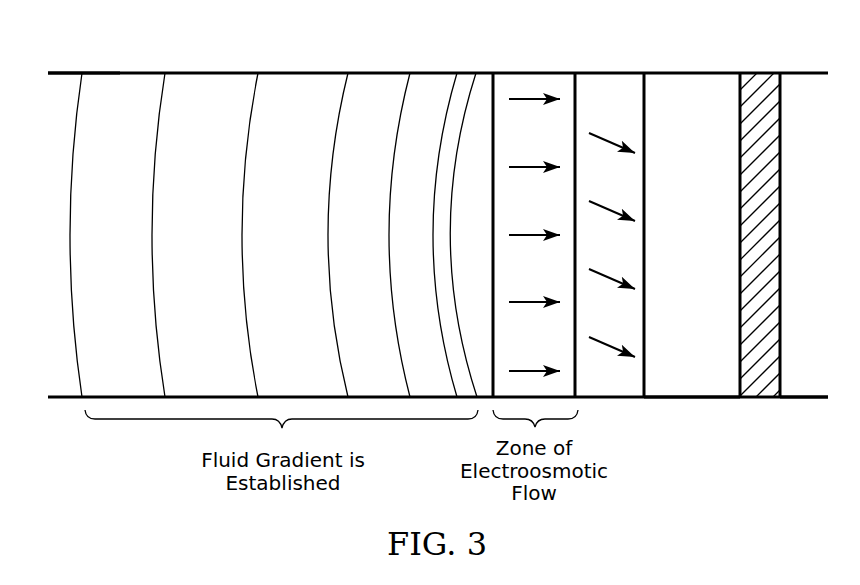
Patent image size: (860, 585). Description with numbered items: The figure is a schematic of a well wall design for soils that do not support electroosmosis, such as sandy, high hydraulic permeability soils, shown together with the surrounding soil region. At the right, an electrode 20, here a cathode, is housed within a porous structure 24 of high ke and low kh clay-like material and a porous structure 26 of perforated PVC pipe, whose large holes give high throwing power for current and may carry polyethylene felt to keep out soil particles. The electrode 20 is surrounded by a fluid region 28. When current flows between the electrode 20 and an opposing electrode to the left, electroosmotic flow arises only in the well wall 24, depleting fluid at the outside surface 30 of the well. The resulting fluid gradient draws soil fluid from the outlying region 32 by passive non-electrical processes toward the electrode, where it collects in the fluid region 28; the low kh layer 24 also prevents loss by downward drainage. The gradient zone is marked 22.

The electrode 20 is at (760, 80).
The fluid gradient region 22 is at (120, 73).
The porous structure 24 is at (531, 80).
The porous structure 26 is at (608, 80).
The fluid region 28 is at (677, 252).
The outside surface 30 is at (449, 97).
The outlying region 32 is at (50, 90).